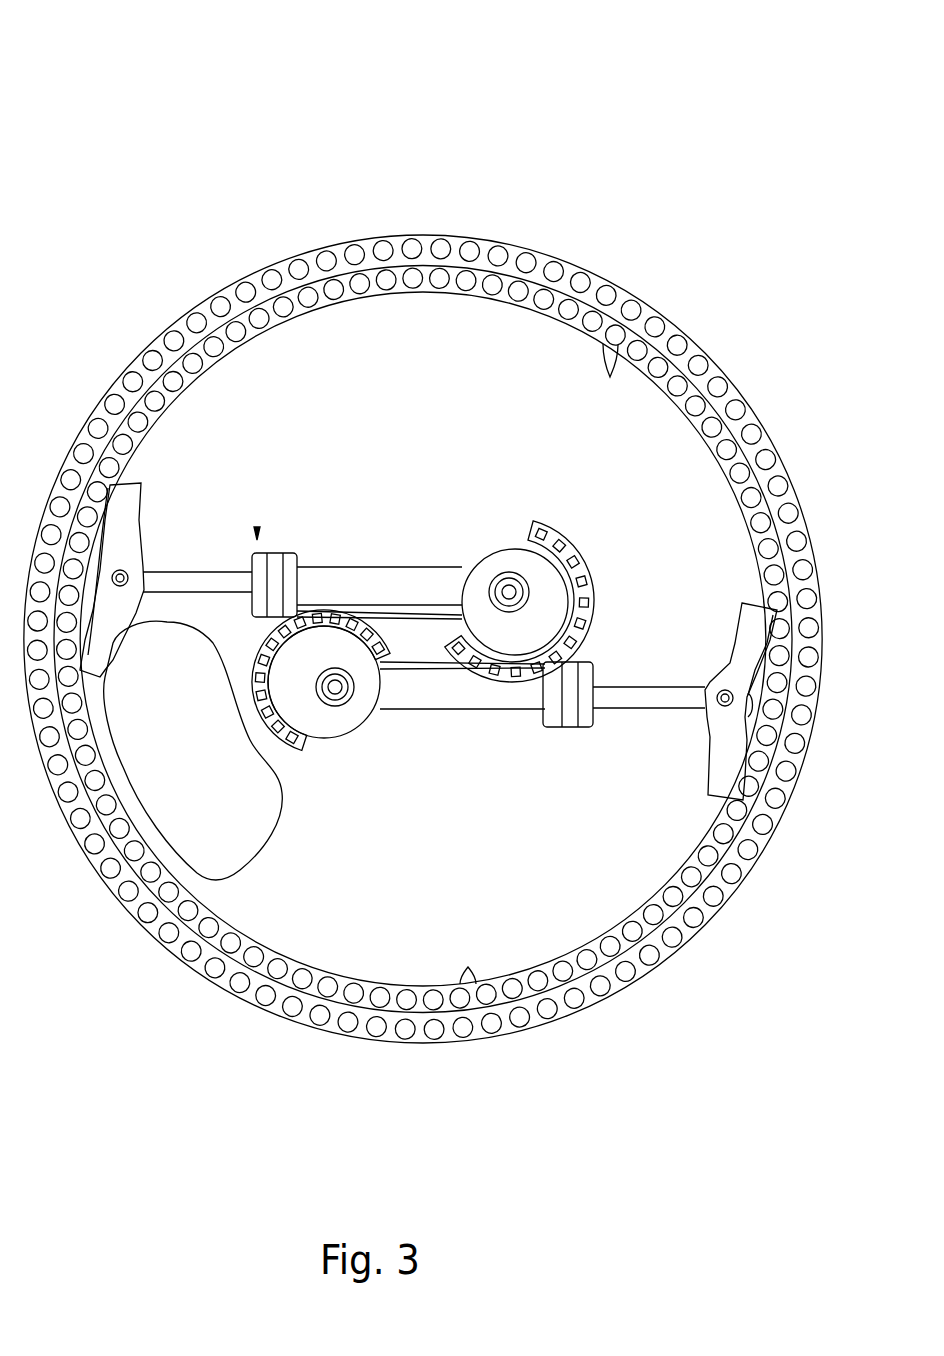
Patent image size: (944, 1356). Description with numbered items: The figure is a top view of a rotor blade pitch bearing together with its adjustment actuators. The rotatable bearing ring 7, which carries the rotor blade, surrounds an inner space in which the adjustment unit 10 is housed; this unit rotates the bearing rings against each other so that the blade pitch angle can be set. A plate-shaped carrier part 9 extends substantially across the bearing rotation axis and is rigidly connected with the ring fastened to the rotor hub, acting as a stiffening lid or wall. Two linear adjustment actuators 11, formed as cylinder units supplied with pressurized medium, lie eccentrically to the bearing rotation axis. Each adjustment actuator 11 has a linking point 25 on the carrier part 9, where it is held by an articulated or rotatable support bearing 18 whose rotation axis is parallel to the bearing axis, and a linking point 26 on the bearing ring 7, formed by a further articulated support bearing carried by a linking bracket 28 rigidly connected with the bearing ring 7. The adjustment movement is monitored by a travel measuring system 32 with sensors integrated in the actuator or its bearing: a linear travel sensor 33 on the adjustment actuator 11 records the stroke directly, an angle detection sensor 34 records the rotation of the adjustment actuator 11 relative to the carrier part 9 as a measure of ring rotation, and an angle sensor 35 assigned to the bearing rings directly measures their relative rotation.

The inner bearing ring 7 is at (469, 981).
The carrier part 9 is at (437, 847).
The adjustment unit 10 is at (520, 758).
The adjustment actuator 11 is at (366, 582).
The support bearing 18 is at (518, 583).
The linking point 25 is at (510, 585).
The linking point 26 is at (120, 578).
The linking bracket 28 is at (125, 494).
The travel measuring system 32 is at (257, 527).
The linear travel sensor 33 is at (268, 553).
The angle detection sensor 34 is at (538, 578).
The angle sensor 35 is at (618, 352).